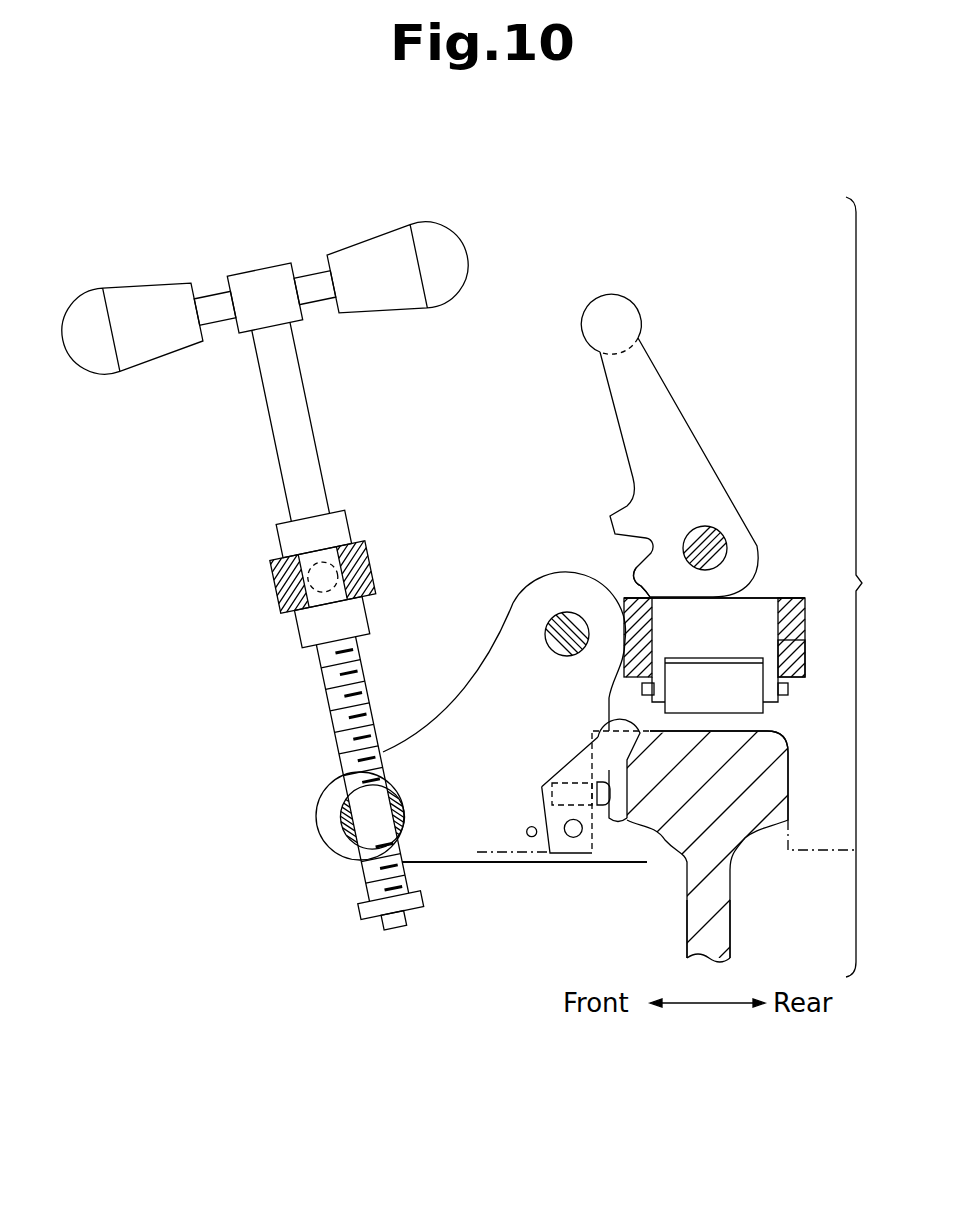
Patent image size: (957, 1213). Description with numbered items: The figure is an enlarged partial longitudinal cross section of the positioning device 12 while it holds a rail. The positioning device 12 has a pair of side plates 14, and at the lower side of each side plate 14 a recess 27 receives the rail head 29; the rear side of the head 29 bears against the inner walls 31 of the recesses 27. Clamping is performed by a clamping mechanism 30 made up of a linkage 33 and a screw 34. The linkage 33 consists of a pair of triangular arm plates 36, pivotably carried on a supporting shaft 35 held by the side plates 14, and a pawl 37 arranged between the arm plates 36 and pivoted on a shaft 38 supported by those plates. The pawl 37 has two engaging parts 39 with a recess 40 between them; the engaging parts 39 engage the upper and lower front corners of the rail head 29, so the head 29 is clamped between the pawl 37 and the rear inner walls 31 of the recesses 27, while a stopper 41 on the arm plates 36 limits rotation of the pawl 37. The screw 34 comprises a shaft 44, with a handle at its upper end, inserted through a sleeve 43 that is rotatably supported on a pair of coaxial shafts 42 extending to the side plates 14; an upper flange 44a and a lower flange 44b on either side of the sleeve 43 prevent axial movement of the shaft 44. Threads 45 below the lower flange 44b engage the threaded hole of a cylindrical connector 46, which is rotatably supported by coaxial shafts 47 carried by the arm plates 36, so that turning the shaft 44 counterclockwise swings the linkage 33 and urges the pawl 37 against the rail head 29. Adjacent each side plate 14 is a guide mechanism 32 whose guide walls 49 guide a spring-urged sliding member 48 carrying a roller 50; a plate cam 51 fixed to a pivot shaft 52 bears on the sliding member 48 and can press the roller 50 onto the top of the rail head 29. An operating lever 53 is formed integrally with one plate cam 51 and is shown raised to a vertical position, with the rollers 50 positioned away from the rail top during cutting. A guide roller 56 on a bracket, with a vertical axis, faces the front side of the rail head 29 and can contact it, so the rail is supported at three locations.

The positioning device 12 is at (873, 587).
The side plate 14 is at (846, 853).
The recess 27 is at (785, 840).
The rail head 29 is at (760, 795).
The clamping mechanism 30 is at (532, 875).
The inner wall 31 is at (799, 764).
The guide mechanism 32 is at (768, 576).
The linkage 33 is at (512, 594).
The screw 34 is at (322, 696).
The supporting shaft 35 is at (560, 642).
The arm plate 36 is at (462, 864).
The pawl 37 is at (541, 806).
The shaft 38 is at (575, 840).
The engaging part 39 is at (618, 722).
The recess 40 is at (618, 795).
The stopper 41 is at (526, 832).
The coaxial shaft 42 is at (319, 562).
The sleeve 43 is at (282, 588).
The shaft 44 is at (283, 431).
The upper flange 44a is at (350, 518).
The lower flange 44b is at (362, 617).
The threads 45 is at (355, 873).
The cylindrical connector 46 is at (327, 822).
The coaxial shaft 47 is at (340, 787).
The sliding member 48 is at (760, 618).
The guide wall 49 is at (780, 655).
The roller 50 is at (748, 702).
The plate cam 51 is at (641, 582).
The shaft 52 is at (697, 540).
The operating lever 53 is at (657, 376).
The guide roller 56 is at (570, 782).